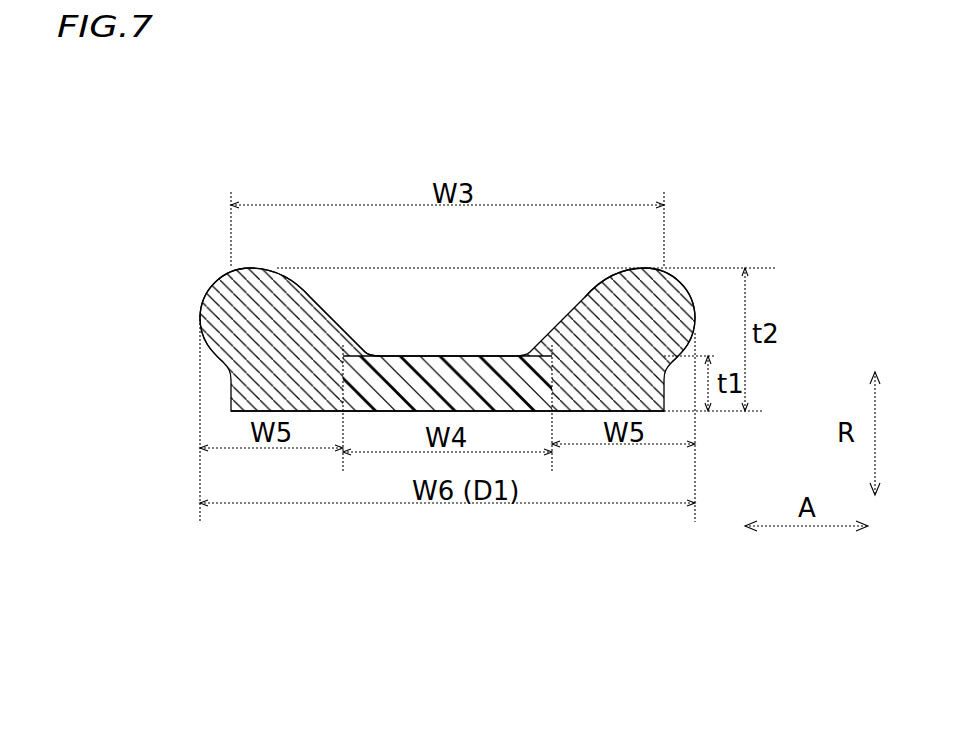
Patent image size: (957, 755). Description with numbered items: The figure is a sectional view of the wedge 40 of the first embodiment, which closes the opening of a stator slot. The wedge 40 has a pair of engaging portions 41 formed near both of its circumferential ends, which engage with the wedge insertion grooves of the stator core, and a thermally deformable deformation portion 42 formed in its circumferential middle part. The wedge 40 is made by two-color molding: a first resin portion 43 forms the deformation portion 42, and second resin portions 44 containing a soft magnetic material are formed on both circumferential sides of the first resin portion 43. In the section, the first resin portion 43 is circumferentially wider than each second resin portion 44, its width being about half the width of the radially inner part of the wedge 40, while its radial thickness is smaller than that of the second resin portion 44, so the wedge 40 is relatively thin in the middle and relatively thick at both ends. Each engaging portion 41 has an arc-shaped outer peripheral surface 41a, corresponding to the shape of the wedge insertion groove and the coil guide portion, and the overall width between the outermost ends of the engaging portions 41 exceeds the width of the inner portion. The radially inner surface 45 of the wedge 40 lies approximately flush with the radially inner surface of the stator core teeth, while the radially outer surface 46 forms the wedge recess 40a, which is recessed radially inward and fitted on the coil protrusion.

The wedge 40 is at (188, 130).
The wedge recess 40a is at (327, 310).
The engaging portion 41 is at (367, 324).
The outer peripheral surface 41a is at (222, 279).
The deformation portion 42 is at (447, 343).
The first resin portion 43 is at (470, 357).
The second resin portion 44 is at (201, 323).
The radially inner surface 45 is at (242, 411).
The radially outer surface 46 is at (370, 353).